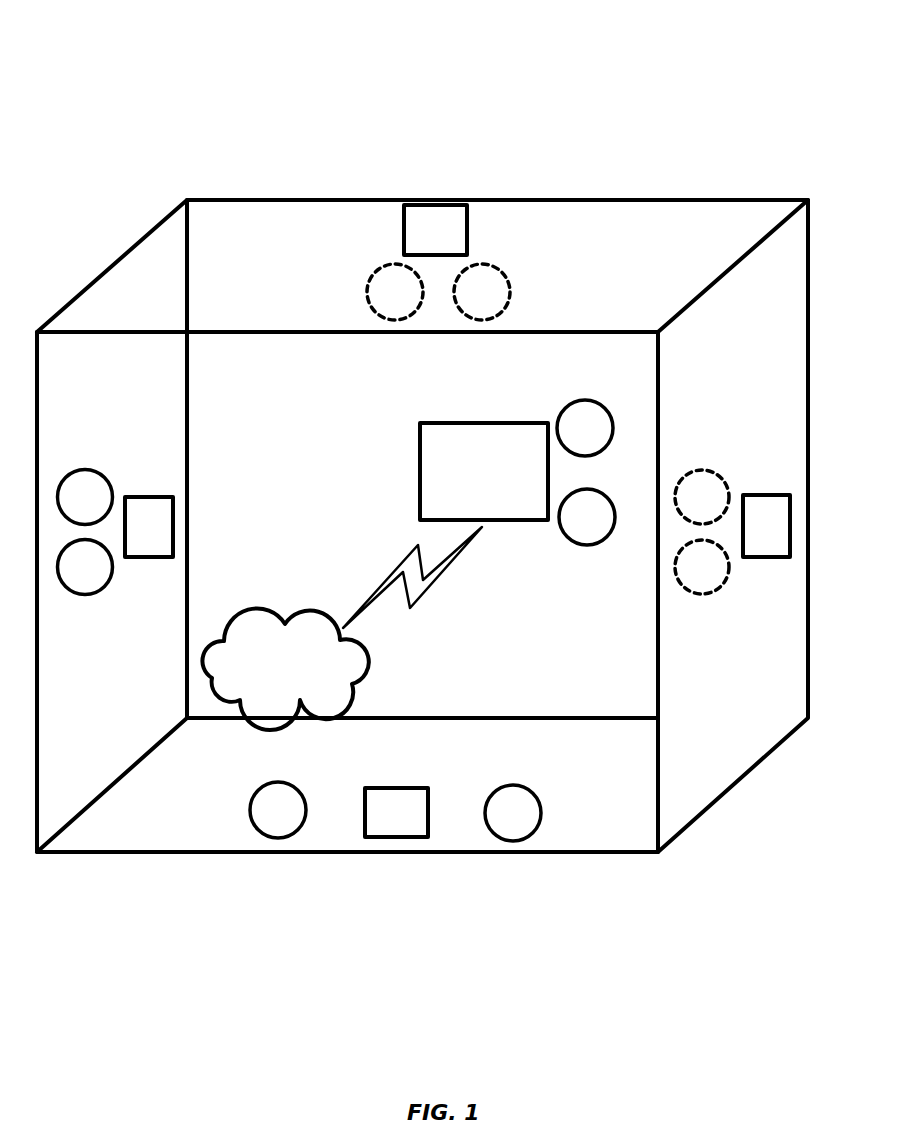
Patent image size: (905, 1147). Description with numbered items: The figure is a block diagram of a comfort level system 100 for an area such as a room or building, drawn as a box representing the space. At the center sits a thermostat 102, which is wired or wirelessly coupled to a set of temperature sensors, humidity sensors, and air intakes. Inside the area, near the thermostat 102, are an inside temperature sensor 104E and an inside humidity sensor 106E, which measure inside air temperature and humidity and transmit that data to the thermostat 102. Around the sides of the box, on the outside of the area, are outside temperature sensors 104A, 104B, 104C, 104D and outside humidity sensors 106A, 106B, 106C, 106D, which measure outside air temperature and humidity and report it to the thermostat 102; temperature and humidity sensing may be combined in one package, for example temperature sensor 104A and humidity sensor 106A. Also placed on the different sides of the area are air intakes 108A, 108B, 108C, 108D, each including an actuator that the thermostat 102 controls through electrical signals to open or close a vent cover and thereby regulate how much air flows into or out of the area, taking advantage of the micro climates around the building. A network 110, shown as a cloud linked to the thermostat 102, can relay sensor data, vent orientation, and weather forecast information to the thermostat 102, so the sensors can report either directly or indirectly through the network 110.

The comfort level system 100 is at (108, 90).
The thermostat 102 is at (460, 452).
The temperature sensor 104A is at (283, 815).
The temperature sensor 104B is at (82, 495).
The temperature sensor 104C is at (395, 297).
The temperature sensor 104D is at (700, 495).
The temperature sensor 104E is at (582, 437).
The humidity sensor 106A is at (510, 817).
The humidity sensor 106B is at (85, 570).
The humidity sensor 106C is at (477, 297).
The humidity sensor 106D is at (703, 572).
The humidity sensor 106E is at (587, 515).
The air intake 108A is at (395, 813).
The air intake 108B is at (138, 522).
The air intake 108C is at (443, 247).
The air intake 108D is at (757, 520).
The network 110 is at (317, 637).